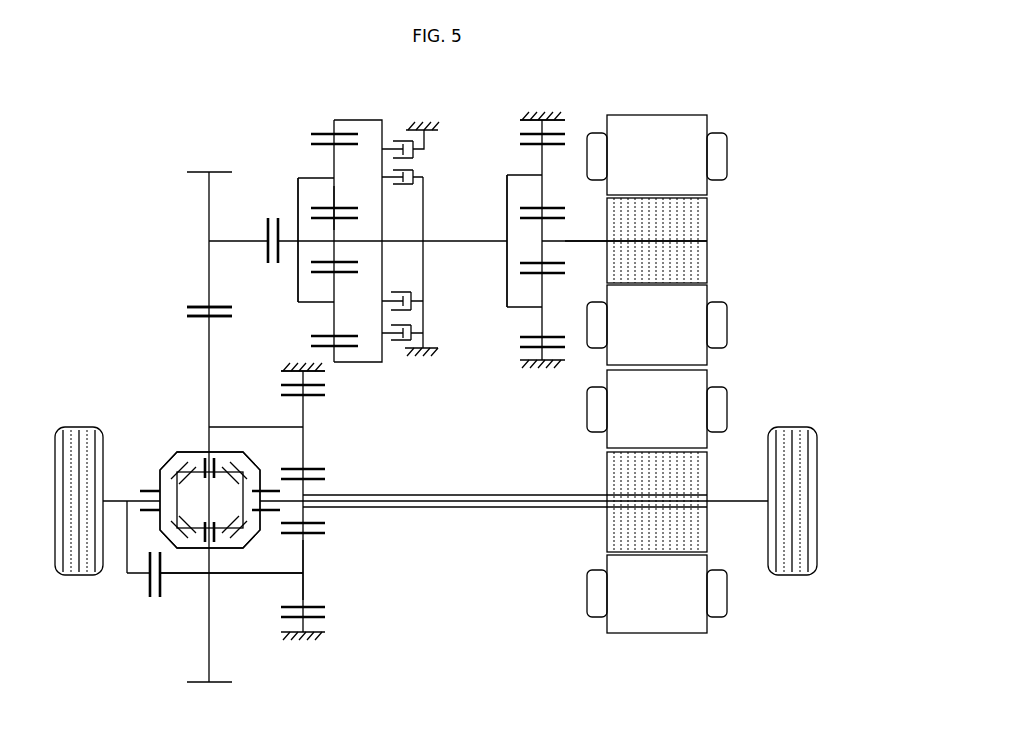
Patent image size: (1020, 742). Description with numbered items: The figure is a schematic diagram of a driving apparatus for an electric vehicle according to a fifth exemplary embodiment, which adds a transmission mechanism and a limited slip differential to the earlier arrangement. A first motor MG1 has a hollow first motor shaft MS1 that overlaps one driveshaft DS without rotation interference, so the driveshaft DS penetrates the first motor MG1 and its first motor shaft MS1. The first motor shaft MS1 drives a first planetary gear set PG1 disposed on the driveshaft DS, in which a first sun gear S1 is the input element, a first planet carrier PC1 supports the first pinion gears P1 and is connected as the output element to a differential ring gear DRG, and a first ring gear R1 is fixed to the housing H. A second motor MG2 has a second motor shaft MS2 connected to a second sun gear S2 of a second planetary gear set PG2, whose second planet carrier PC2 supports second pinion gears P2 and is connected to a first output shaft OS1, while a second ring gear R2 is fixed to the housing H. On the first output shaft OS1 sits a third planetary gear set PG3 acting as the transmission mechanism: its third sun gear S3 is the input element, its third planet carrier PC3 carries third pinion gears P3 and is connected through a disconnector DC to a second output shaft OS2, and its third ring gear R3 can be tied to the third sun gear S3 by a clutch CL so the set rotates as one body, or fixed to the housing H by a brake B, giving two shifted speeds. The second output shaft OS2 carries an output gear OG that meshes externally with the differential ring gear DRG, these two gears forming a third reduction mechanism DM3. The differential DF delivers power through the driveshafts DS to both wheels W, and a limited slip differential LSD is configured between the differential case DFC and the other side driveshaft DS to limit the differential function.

The third planetary gear set PG3 is at (296, 152).
The third ring gear R3 is at (323, 130).
The third pinion gears P3 is at (335, 196).
The third sun gear S3 is at (346, 218).
The third planet carrier PC3 is at (298, 296).
The brake B is at (401, 140).
The clutch CL is at (412, 175).
The first output shaft OS1 is at (390, 244).
The second output shaft OS2 is at (236, 244).
The disconnector DC is at (272, 208).
The third reduction mechanism DM3 is at (112, 287).
The output gear OG is at (187, 306).
The differential ring gear DRG is at (187, 317).
The second planetary gear set PG2 is at (510, 150).
The housing H is at (543, 118).
The second ring gear R2 is at (565, 136).
The second pinion gears P2 is at (543, 193).
The second sun gear S2 is at (553, 264).
The second planet carrier PC2 is at (507, 192).
The second motor MG2 is at (742, 148).
The second motor shaft MS2 is at (583, 243).
The first motor MG1 is at (745, 397).
The first motor shaft MS1 is at (437, 494).
The wheels W is at (76, 576).
The driveshaft DS is at (119, 499).
The differential DF is at (184, 566).
The differential case DFC is at (176, 455).
The limited slip differential LSD is at (140, 600).
The first planetary gear set PG1 is at (340, 618).
The first sun gear S1 is at (325, 523).
The first pinion gears P1 is at (305, 588).
The first ring gear R1 is at (283, 622).
The first planet carrier PC1 is at (236, 575).